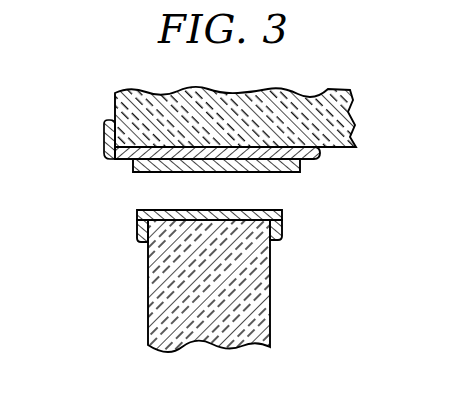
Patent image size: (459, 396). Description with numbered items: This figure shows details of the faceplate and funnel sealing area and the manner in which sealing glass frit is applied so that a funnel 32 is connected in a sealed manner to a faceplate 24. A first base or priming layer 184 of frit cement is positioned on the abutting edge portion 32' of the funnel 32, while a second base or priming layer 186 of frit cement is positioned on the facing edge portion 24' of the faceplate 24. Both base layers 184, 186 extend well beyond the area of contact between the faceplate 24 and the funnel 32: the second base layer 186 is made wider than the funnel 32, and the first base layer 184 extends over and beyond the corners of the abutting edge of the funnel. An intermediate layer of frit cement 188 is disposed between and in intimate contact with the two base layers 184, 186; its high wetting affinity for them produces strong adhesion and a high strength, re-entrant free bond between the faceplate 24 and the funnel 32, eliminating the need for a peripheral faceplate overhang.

The faceplate 24 is at (258, 115).
The facing edge portion of the faceplate 24' is at (84, 148).
The second base or priming layer of frit cement 186 is at (319, 157).
The intermediate layer of frit cement 188 is at (301, 173).
The funnel 32 is at (240, 286).
The abutting edge portion of the funnel 32' is at (193, 201).
The first base or priming layer of frit cement 184 is at (137, 219).